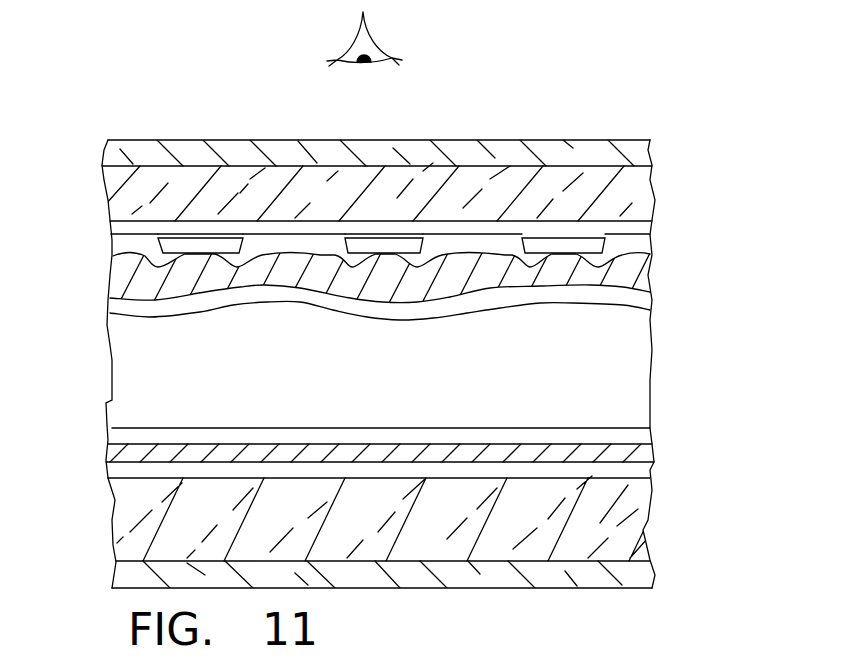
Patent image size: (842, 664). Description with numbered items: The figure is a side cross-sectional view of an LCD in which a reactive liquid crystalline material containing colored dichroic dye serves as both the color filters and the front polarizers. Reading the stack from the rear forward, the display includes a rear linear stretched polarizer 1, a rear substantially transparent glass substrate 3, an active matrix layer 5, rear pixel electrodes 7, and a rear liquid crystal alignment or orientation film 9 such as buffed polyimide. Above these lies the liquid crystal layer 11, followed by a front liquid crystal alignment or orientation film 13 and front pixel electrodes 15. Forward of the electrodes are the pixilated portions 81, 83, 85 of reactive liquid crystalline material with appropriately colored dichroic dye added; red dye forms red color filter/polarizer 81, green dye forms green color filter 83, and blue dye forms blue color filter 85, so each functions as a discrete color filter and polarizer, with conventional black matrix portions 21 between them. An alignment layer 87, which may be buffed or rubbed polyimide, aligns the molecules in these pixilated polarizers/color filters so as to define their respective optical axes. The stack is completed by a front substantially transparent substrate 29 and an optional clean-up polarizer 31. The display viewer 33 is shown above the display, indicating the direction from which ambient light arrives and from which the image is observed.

The display viewer 33 is at (380, 46).
The clean-up polarizer 31 is at (610, 153).
The front substantially transparent substrate 29 is at (622, 190).
The alignment layer 87 is at (130, 228).
The red color filter/polarizer 81 is at (146, 247).
The green color filter 83 is at (312, 243).
The blue color filter 85 is at (445, 242).
The black matrix portions 21 is at (192, 242).
The front pixel electrode 15 is at (635, 273).
The front liquid crystal alignment film 13 is at (627, 302).
The liquid crystal layer 11 is at (148, 361).
The rear liquid crystal alignment film 9 is at (167, 437).
The rear pixel electrode 7 is at (607, 452).
The active matrix layer 5 is at (153, 468).
The rear substantially transparent glass substrate 3 is at (607, 518).
The rear linear stretched polarizer 1 is at (613, 575).